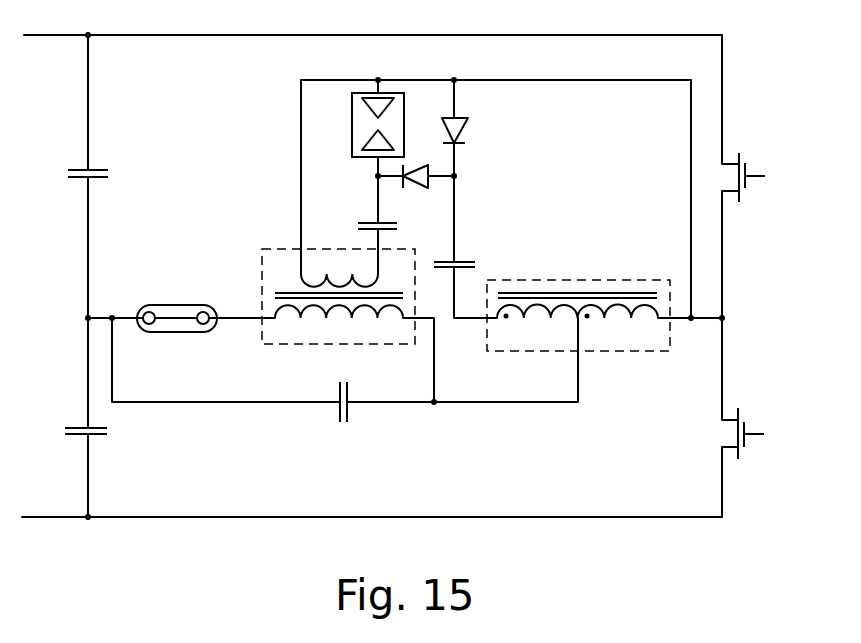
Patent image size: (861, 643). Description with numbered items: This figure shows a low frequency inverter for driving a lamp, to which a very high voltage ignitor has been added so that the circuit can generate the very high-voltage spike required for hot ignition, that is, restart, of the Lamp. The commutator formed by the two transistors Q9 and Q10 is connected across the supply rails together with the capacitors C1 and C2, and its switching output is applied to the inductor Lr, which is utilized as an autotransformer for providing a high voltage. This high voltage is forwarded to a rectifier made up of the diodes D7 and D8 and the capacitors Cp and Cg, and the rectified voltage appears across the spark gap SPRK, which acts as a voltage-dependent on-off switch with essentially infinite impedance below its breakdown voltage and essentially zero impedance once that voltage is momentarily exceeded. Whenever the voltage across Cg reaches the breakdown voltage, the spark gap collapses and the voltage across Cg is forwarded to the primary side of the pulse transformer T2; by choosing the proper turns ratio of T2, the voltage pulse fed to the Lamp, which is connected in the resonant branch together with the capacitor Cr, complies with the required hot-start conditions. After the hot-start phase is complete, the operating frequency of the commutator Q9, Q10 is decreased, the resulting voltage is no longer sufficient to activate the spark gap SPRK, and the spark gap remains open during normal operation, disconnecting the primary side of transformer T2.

The capacitor C1 is at (71, 193).
The capacitor C2 is at (67, 448).
The spark gap SPRK is at (377, 109).
The rectifier capacitor Cg is at (365, 225).
The rectifier diode D7 is at (476, 171).
The rectifier diode D8 is at (416, 198).
The rectifier capacitor Cp is at (468, 267).
The pulse transformer T2 is at (338, 274).
The lamp Lamp is at (177, 298).
The resonant capacitor Cr is at (322, 414).
The autotransformer inductor Lr is at (578, 294).
The commutator transistor Q9 is at (763, 167).
The commutator transistor Q10 is at (770, 424).